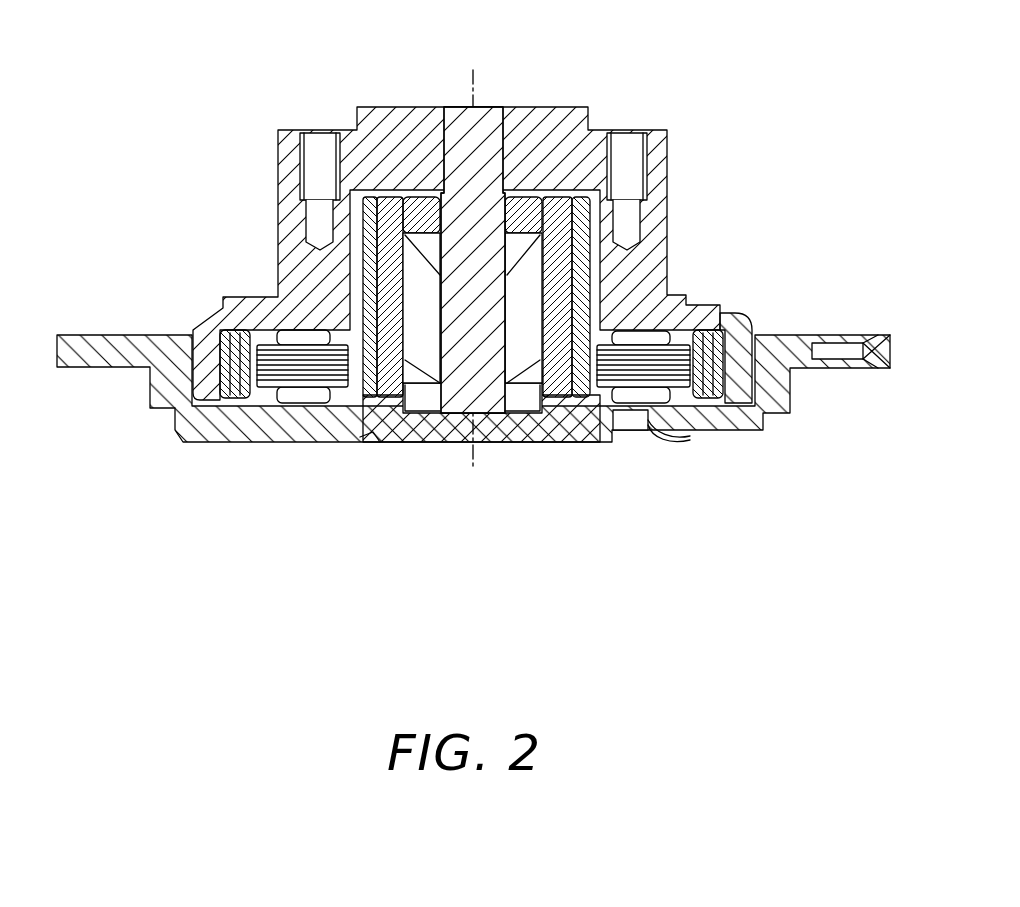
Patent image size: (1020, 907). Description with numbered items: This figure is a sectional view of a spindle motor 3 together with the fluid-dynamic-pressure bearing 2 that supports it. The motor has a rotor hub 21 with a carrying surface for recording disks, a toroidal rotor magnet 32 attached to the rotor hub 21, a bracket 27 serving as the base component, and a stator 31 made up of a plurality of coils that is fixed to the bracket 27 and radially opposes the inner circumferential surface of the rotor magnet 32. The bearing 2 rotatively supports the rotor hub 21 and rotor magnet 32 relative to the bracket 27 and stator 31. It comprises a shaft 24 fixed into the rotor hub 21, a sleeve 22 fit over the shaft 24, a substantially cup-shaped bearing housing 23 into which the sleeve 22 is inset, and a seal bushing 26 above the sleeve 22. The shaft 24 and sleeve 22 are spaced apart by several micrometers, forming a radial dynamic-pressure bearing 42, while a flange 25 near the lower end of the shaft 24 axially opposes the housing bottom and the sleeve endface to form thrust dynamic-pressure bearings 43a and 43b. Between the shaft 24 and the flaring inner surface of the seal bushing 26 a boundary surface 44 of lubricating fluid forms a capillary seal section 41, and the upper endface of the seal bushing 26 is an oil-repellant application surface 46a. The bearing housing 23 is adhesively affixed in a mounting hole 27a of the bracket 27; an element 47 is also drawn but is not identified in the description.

The fluid-dynamic-pressure bearing 2 is at (377, 445).
The spindle motor 3 is at (662, 98).
The rotor hub 21 is at (630, 287).
The sleeve 22 is at (522, 320).
The bearing housing 23 is at (585, 420).
The shaft 24 is at (485, 413).
The flange 25 is at (500, 413).
The seal bushing 26 is at (513, 207).
The bracket 27 is at (592, 410).
The mounting hole 27a is at (384, 447).
The stator 31 is at (650, 385).
The rotor magnet 32 is at (703, 363).
The capillary seal section 41 is at (512, 186).
The radial dynamic-pressure bearing 42 is at (440, 290).
The thrust dynamic-pressure bearing 43a is at (430, 395).
The thrust dynamic-pressure bearing 43b is at (460, 413).
The boundary surface 44 is at (480, 205).
The stator-side oil-repellant application surface 46a is at (440, 189).
The spacer 47 is at (360, 328).